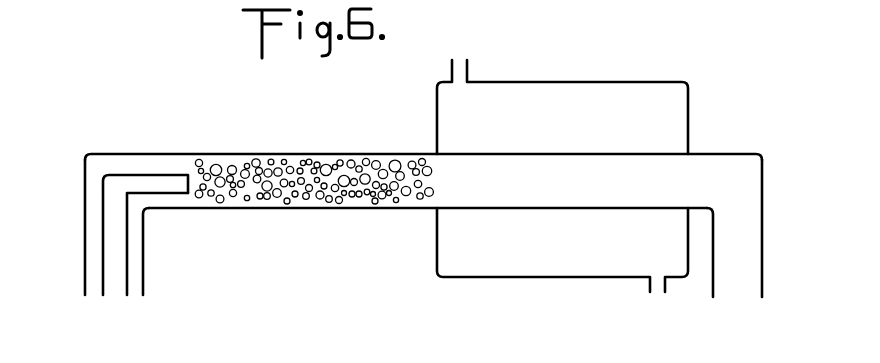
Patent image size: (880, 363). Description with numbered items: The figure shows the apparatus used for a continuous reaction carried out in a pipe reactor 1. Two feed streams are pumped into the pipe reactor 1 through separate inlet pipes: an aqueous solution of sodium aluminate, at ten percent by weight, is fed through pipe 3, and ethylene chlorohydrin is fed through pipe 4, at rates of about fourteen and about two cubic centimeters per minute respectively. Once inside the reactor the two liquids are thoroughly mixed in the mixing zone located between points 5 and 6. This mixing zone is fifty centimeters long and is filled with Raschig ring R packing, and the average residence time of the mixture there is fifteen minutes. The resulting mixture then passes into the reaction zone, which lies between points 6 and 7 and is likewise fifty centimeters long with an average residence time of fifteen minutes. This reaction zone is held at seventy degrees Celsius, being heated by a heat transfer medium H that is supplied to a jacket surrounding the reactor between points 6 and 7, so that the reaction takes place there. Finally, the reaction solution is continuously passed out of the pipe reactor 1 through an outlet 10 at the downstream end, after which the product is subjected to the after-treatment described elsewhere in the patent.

The pipe reactor 1 is at (423, 181).
The pipe 3 is at (136, 287).
The pipe 4 is at (94, 287).
The mixing zone inlet point 5 is at (193, 159).
The mixing zone/reaction zone boundary point 6 is at (427, 137).
The reaction zone outlet point 7 is at (699, 137).
The outlet 10 is at (734, 243).
The Raschig ring R is at (319, 153).
The heat transfer medium H is at (458, 62).